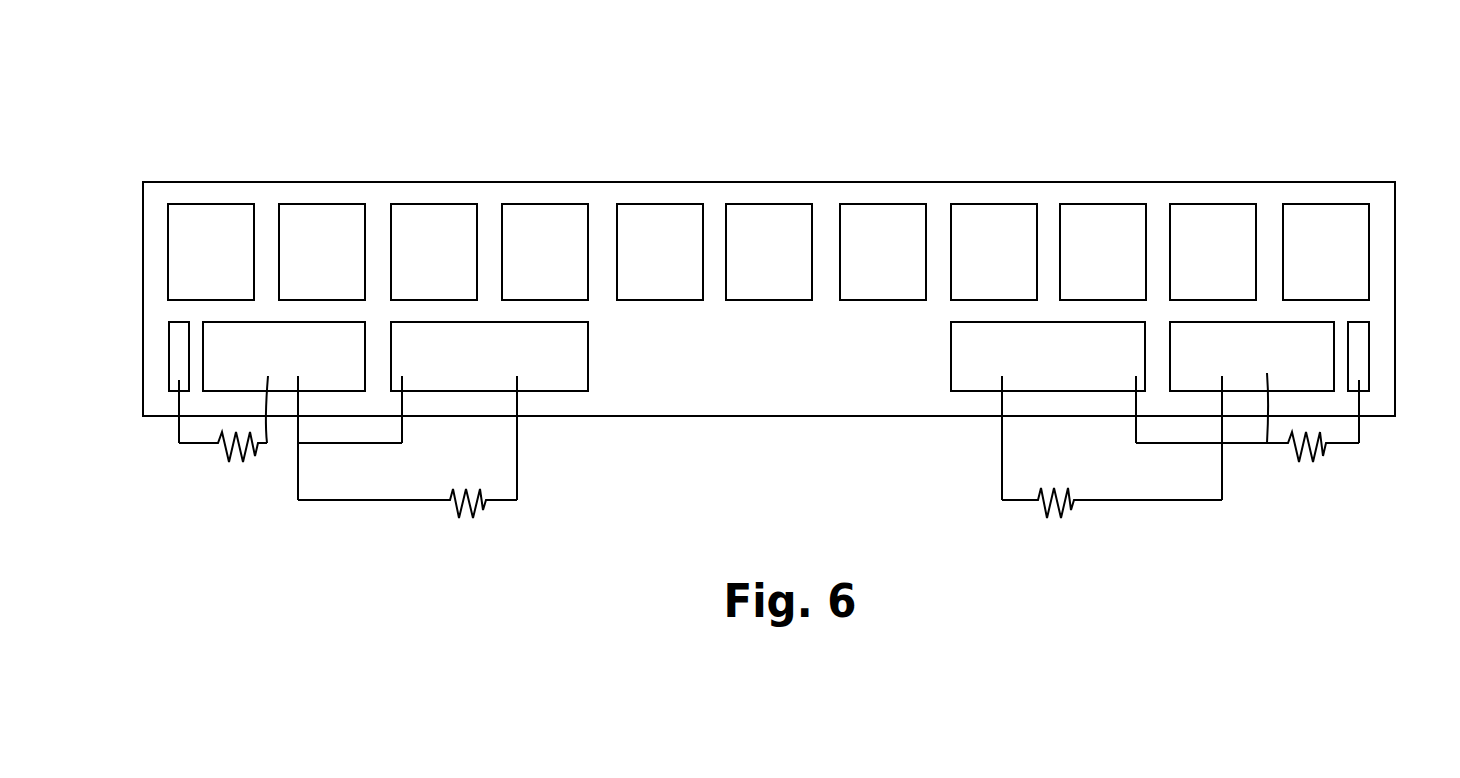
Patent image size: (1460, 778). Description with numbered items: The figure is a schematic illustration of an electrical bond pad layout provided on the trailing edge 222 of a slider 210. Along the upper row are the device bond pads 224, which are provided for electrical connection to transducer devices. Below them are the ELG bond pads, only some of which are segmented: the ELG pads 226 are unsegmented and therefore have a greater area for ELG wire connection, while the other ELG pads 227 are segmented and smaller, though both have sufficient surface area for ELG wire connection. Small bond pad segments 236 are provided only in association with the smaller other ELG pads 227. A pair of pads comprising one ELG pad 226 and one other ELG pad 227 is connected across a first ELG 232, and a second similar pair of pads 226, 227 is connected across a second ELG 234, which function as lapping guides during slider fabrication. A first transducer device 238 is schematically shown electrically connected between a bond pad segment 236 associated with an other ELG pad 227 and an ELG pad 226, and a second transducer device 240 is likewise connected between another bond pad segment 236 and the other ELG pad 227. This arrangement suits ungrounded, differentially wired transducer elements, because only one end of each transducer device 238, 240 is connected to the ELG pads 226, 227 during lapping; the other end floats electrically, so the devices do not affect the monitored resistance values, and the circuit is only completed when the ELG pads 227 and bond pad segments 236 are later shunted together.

The slider 210 is at (833, 181).
The trailing edge 222 is at (610, 417).
The device bond pads 224 is at (233, 222).
The ELG pads 226 is at (548, 372).
The other ELG pads 227 is at (267, 443).
The first ELG 232 is at (428, 503).
The second ELG 234 is at (1060, 518).
The bond pad segments 236 is at (180, 361).
The first transducer device 238 is at (220, 433).
The second transducer device 240 is at (1318, 437).